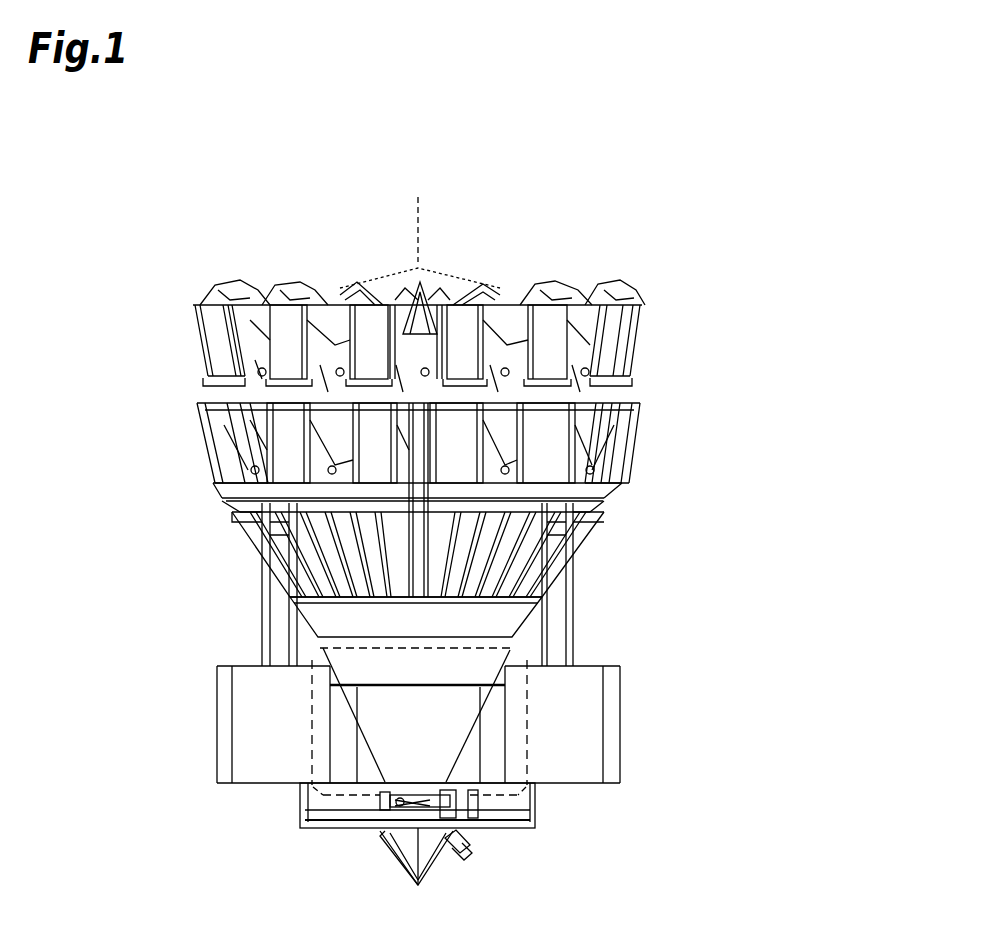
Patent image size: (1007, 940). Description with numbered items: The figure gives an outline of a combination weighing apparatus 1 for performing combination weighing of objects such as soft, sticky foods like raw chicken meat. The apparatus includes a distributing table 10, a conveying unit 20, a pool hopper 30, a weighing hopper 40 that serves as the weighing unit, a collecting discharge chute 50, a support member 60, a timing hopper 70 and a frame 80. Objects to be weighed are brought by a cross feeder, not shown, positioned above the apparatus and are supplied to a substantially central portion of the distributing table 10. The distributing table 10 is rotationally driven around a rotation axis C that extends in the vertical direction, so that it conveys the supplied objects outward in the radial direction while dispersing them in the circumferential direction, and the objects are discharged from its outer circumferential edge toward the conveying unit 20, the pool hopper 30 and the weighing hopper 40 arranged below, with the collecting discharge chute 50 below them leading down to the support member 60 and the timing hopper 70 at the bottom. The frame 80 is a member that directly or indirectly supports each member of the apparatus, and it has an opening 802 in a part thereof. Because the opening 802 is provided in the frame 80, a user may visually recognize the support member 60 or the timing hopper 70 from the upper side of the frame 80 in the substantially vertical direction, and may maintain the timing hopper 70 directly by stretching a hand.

The combination weighing apparatus 1 is at (603, 168).
The distributing table 10 is at (438, 288).
The conveying unit 20 is at (323, 278).
The pool hopper 30 is at (617, 342).
The weighing hopper 40 is at (613, 450).
The collecting discharge chute 50 is at (507, 623).
The support member 60 is at (550, 817).
The timing hopper 70 is at (447, 873).
The frame 80 is at (600, 740).
The opening 802 is at (312, 735).